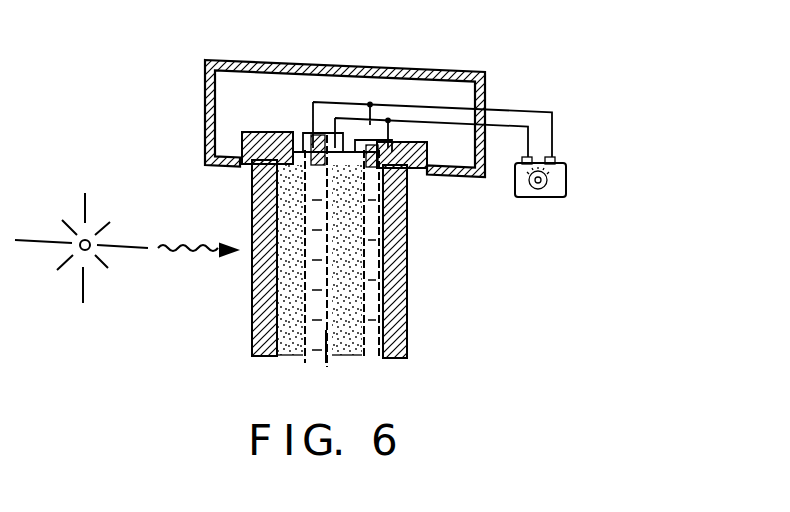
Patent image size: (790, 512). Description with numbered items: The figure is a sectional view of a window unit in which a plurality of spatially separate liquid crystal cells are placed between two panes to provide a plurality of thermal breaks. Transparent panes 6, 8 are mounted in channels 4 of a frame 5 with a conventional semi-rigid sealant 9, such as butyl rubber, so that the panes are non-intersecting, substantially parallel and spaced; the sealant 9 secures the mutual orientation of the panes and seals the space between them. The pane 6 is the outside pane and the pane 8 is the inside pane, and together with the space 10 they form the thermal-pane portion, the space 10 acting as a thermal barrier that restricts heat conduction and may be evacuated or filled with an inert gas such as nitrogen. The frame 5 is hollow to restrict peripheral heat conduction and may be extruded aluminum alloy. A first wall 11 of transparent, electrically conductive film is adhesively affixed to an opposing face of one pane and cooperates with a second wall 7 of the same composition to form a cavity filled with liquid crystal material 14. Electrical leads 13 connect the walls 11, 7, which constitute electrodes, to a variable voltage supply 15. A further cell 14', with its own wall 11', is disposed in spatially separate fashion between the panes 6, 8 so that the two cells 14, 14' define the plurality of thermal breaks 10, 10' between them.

The channels 4 is at (277, 132).
The frame 5 is at (237, 60).
The transparent pane 6 is at (258, 270).
The second wall 7 is at (300, 305).
The transparent pane 8 is at (405, 262).
The semi-rigid sealant 9 is at (253, 166).
The space 10 is at (361, 377).
The thermal break 10' is at (272, 376).
The first wall 11 is at (416, 270).
The insulating tube 11' is at (385, 341).
The electrical leads 13 is at (503, 118).
The liquid crystal material 14 is at (404, 251).
The liquid crystal cell 14' is at (336, 251).
The variable voltage supply 15 is at (567, 188).